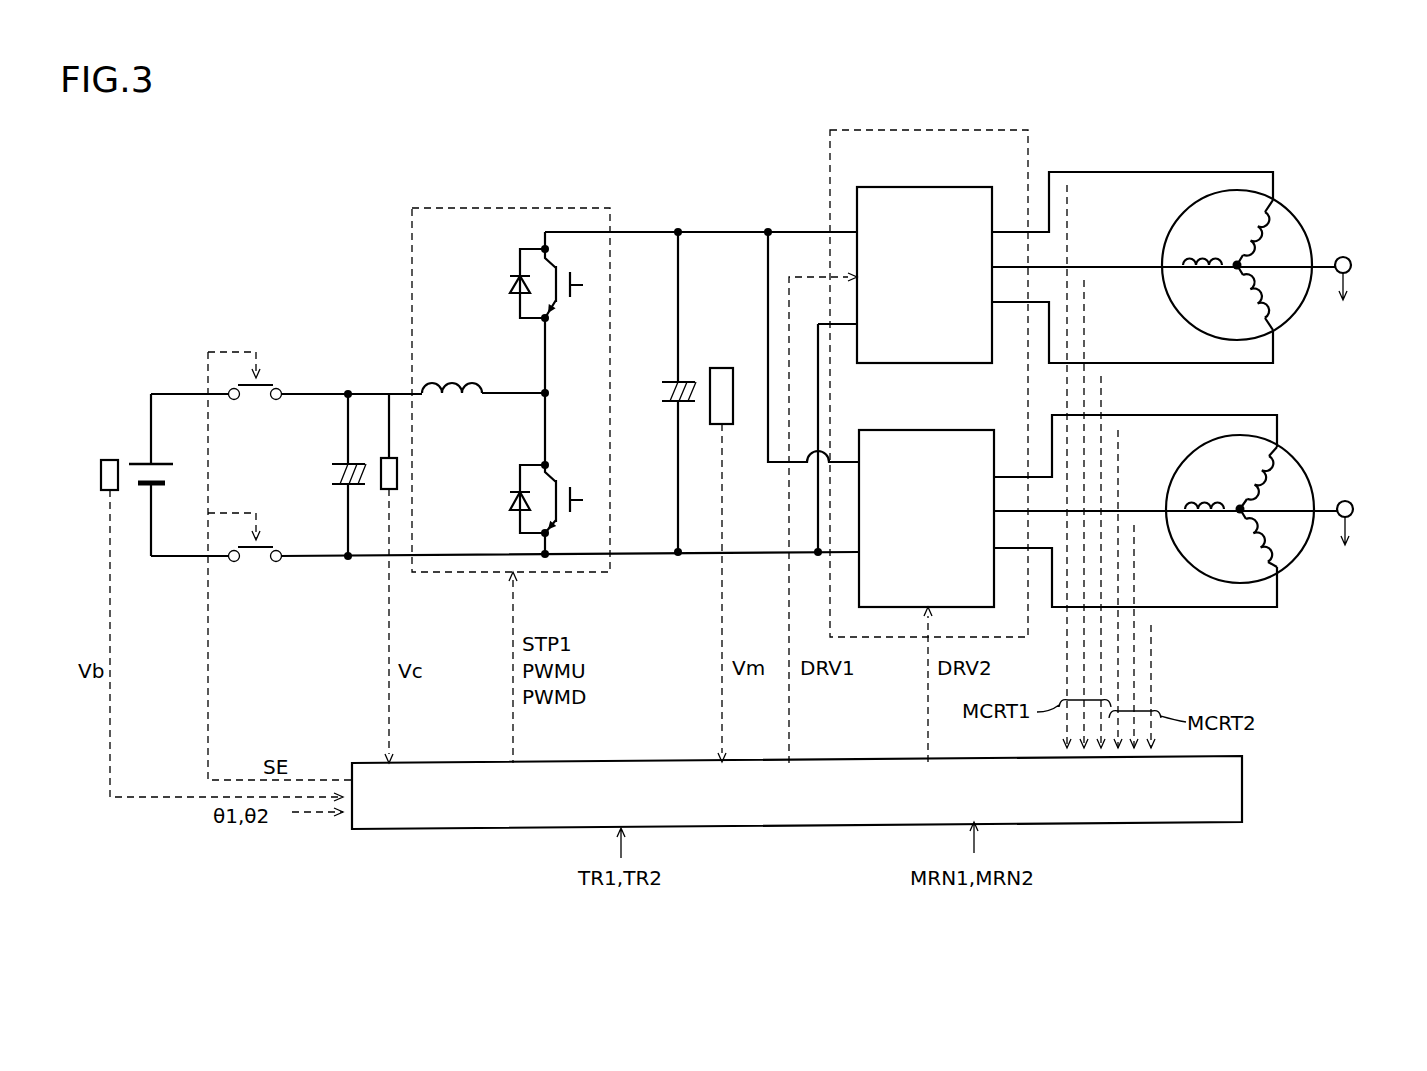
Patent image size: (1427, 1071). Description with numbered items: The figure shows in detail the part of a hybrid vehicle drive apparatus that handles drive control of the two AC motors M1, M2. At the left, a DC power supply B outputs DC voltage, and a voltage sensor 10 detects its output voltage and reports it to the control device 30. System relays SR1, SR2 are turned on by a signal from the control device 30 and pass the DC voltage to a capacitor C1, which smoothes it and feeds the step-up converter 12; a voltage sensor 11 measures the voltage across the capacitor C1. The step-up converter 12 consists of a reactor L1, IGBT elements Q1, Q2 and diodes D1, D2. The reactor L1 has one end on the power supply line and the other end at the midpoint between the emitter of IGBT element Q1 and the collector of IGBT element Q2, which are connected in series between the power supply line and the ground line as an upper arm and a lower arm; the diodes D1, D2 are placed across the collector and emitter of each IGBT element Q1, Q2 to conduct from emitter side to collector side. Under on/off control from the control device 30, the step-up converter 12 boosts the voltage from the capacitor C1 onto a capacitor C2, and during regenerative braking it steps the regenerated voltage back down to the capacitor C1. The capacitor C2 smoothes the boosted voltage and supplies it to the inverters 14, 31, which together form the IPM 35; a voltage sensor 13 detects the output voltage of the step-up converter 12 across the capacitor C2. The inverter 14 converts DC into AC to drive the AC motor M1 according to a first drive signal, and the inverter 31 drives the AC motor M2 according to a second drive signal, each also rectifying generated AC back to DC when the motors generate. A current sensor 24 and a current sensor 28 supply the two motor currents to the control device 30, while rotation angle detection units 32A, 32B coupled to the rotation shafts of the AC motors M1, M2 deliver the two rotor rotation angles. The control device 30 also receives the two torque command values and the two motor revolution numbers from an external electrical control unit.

The DC power supply B is at (160, 475).
The voltage sensor 10 is at (110, 460).
The system relay SR1 is at (273, 385).
The system relay SR2 is at (273, 547).
The capacitor C1 is at (334, 464).
The voltage sensor 11 is at (390, 458).
The step-up converter 12 is at (511, 461).
The reactor L1 is at (452, 382).
The diode D1 is at (509, 285).
The diode D2 is at (509, 501).
The IGBT element Q1 is at (580, 292).
The IGBT element Q2 is at (580, 497).
The capacitor C2 is at (665, 382).
The voltage sensor 13 is at (720, 368).
The IPM 35 is at (923, 130).
The inverter 14 is at (923, 187).
The inverter 31 is at (923, 430).
The AC motor M1 is at (1305, 233).
The AC motor M2 is at (1307, 478).
The current sensor 24 is at (1064, 186).
The current sensor 28 is at (1120, 430).
The rotation angle detection unit 32A is at (1351, 265).
The rotation angle detection unit 32B is at (1353, 509).
The control device 30 is at (1243, 789).